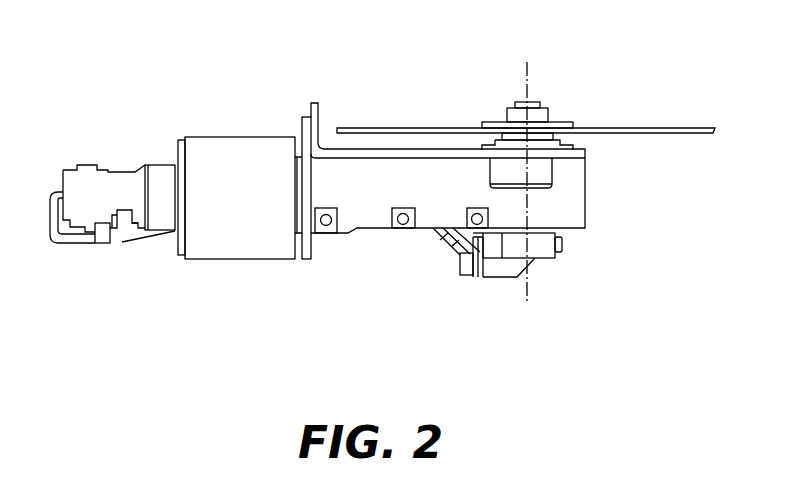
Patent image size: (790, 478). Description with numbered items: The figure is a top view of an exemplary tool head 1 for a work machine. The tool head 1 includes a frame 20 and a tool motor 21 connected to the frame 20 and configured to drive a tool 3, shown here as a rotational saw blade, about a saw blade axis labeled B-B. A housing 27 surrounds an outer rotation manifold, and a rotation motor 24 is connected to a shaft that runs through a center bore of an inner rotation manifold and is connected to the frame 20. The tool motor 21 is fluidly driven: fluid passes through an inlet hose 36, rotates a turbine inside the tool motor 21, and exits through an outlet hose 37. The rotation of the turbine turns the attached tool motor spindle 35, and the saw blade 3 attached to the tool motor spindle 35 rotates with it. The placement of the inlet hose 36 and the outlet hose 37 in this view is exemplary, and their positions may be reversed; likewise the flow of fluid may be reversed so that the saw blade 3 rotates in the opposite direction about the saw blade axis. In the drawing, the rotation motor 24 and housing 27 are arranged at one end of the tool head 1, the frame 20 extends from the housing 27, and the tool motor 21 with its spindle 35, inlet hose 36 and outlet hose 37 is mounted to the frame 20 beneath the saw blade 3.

The tool head 1 is at (117, 98).
The rotation motor 24 is at (90, 172).
The housing 27 is at (243, 145).
The frame 20 is at (575, 212).
The tool 3 is at (704, 128).
The tool motor spindle 35 is at (520, 104).
The outlet hose 37 is at (450, 229).
The inlet hose 36 is at (460, 257).
The tool motor 21 is at (535, 247).